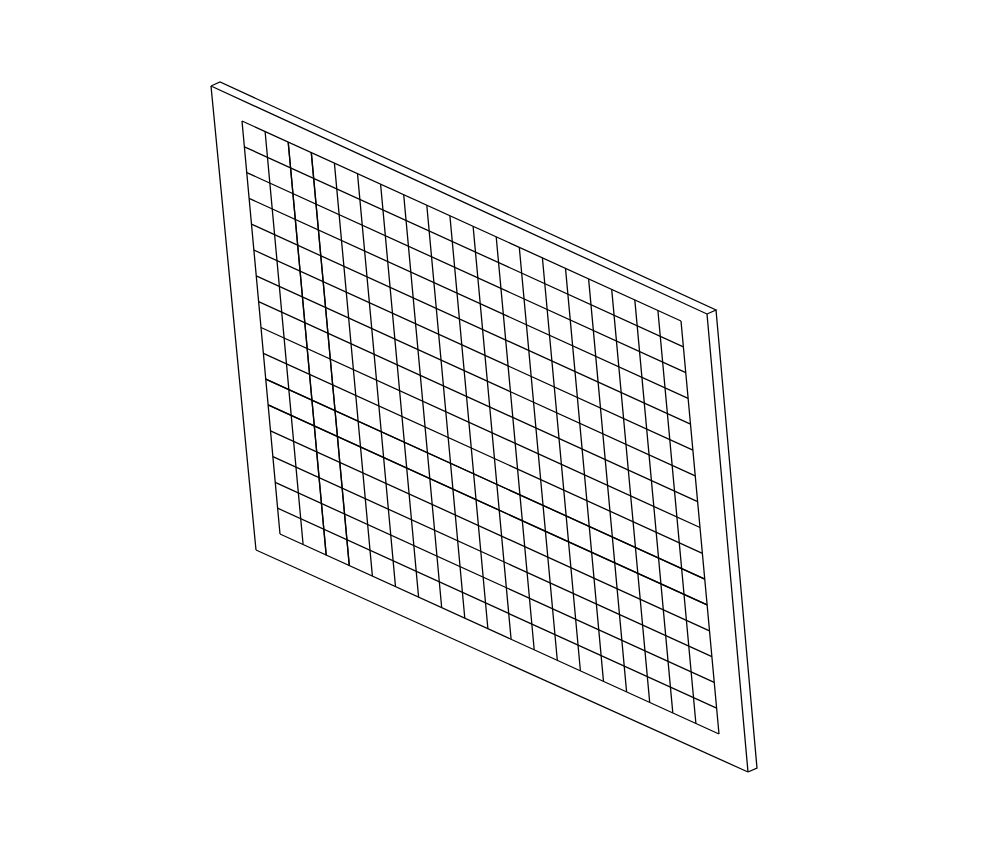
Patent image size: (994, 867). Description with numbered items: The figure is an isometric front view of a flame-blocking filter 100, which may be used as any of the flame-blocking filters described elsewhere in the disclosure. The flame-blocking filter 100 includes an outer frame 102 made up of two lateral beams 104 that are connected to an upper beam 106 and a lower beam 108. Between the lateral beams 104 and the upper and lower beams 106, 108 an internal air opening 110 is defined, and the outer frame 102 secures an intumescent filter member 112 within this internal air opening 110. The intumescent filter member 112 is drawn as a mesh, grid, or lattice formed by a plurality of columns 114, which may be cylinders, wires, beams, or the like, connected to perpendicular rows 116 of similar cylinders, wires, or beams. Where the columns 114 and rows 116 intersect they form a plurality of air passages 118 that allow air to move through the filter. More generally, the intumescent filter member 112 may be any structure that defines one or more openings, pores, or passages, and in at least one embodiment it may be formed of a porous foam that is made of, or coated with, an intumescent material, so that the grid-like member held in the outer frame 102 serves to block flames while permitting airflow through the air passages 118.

The flame-blocking filter 100 is at (150, 56).
The outer frame 102 is at (722, 357).
The lateral beams 104 is at (236, 345).
The upper beam 106 is at (430, 176).
The lower beam 108 is at (427, 627).
The internal air opening 110 is at (518, 282).
The intumescent filter member 112 is at (623, 328).
The columns 114 is at (274, 171).
The rows 116 is at (283, 252).
The air passages 118 is at (303, 498).